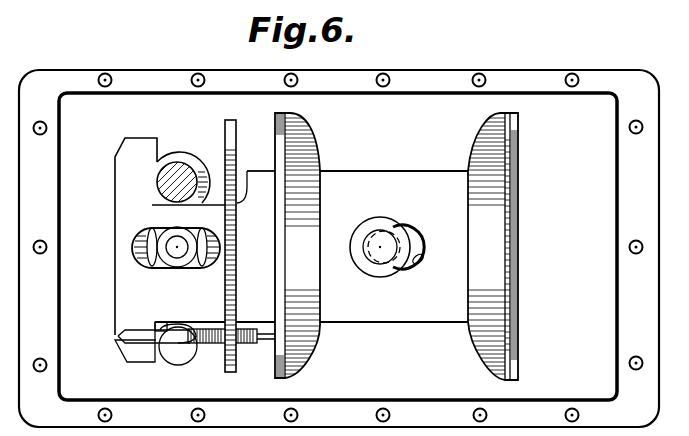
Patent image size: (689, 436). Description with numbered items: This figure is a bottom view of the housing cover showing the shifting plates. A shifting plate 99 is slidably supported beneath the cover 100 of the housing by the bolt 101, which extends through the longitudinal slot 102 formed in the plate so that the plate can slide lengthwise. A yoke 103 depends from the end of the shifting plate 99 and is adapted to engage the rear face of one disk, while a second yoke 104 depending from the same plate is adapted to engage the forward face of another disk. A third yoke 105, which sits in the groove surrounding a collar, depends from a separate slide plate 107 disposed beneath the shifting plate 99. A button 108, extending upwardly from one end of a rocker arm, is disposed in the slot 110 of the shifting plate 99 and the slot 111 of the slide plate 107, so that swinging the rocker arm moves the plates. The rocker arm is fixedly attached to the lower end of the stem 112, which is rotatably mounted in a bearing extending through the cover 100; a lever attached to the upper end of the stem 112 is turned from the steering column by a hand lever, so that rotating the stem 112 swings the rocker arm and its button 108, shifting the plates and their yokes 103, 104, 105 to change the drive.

The shifting plate 99 is at (381, 178).
The cover 100 is at (147, 79).
The bolt 101 is at (386, 222).
The longitudinal slot 102 is at (414, 262).
The yoke 103 is at (494, 260).
The second yoke 104 is at (312, 266).
The third yoke 105 is at (237, 301).
The slide plate 107 is at (122, 210).
The button 108 is at (169, 264).
The slot 110 is at (147, 270).
The slot 111 is at (133, 253).
The stem 112 is at (187, 172).